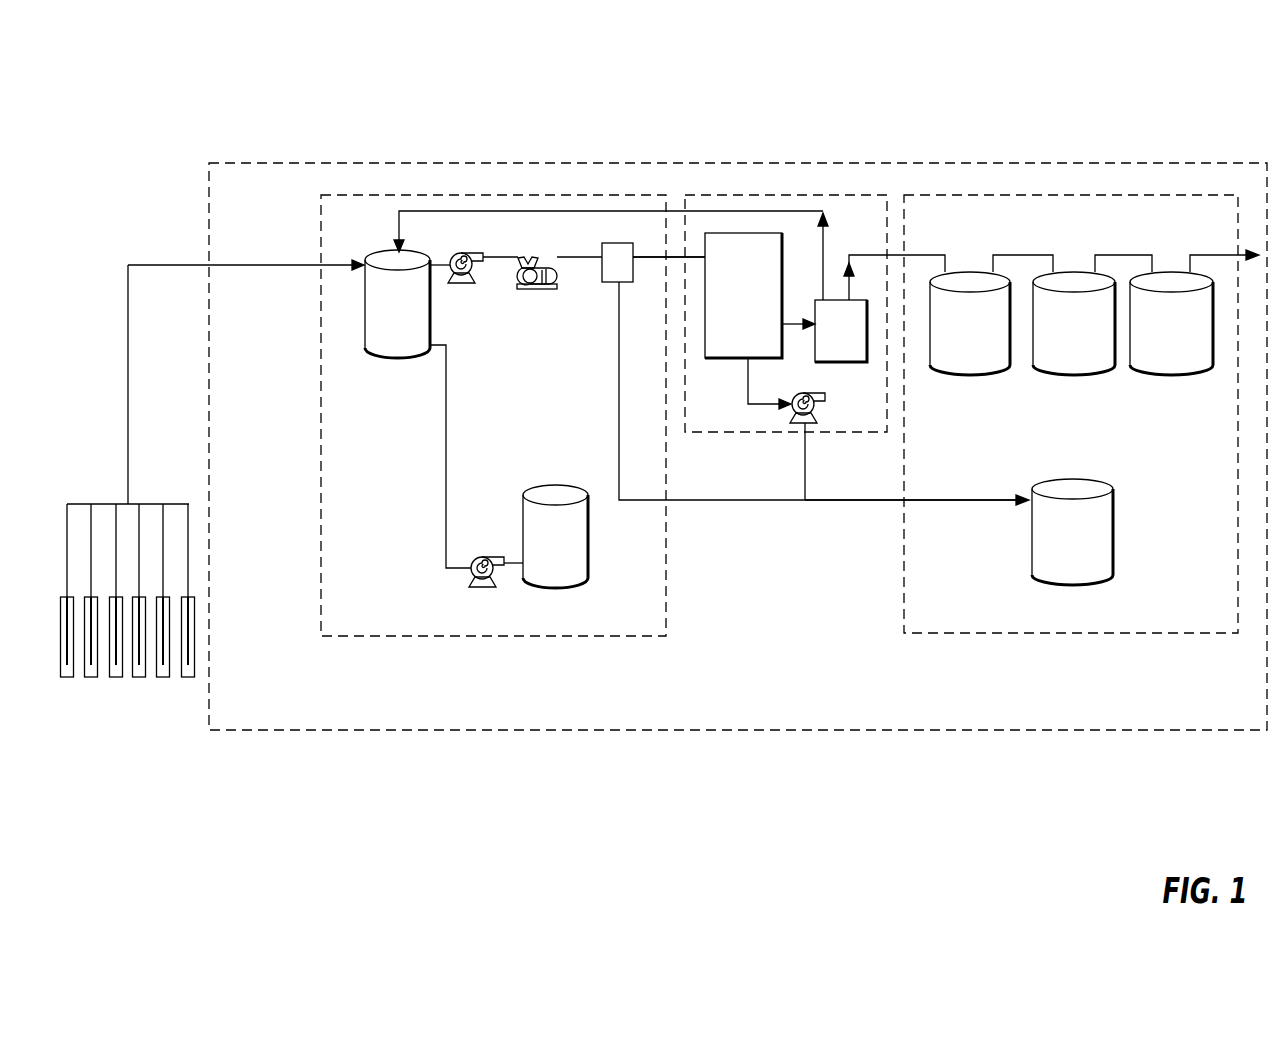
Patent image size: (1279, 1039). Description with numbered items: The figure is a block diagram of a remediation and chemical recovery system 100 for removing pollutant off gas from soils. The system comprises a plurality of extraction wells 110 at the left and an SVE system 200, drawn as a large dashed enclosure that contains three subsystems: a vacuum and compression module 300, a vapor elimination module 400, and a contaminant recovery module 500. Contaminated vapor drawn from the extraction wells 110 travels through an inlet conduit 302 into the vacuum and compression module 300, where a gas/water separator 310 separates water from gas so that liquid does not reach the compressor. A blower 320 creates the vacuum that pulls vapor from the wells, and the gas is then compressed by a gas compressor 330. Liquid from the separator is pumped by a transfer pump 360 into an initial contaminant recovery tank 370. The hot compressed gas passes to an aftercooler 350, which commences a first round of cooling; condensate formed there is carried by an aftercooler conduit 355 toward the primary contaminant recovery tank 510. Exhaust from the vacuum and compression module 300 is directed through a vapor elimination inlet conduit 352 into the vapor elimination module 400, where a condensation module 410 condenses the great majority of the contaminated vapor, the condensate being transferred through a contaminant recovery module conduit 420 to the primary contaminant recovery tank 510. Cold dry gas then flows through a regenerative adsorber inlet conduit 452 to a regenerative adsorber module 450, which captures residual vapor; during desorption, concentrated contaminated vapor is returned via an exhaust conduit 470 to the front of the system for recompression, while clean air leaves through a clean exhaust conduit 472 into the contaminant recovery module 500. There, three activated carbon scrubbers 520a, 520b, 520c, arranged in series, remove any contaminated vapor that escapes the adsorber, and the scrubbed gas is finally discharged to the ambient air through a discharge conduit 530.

The remediation and chemical recovery system 100 is at (1067, 122).
The extraction wells 110 is at (118, 706).
The SVE system 200 is at (792, 163).
The vacuum and compression module 300 is at (462, 637).
The inlet conduit 302 is at (333, 262).
The gas/water separator 310 is at (380, 324).
The blower 320 is at (463, 285).
The gas compressor 330 is at (528, 290).
The aftercooler 350 is at (600, 275).
The vapor elimination inlet conduit 352 is at (645, 262).
The aftercooler conduit 355 is at (618, 396).
The transfer pump 360 is at (488, 553).
The initial contaminant recovery tank 370 is at (538, 551).
The vapor elimination module 400 is at (722, 435).
The condensation module 410 is at (725, 303).
The contaminant recovery module conduit 420 is at (833, 503).
The regenerative adsorber module 450 is at (824, 342).
The regenerative adsorber inlet conduit 452 is at (795, 328).
The exhaust conduit 470 is at (812, 210).
The clean exhaust conduit 472 is at (920, 253).
The contaminant recovery module 500 is at (1007, 636).
The primary contaminant recovery tank 510 is at (1054, 546).
The activated carbon scrubber 520a is at (948, 333).
The activated carbon scrubber 520b is at (1052, 333).
The activated carbon scrubber 520c is at (1150, 333).
The discharge conduit 530 is at (1214, 252).